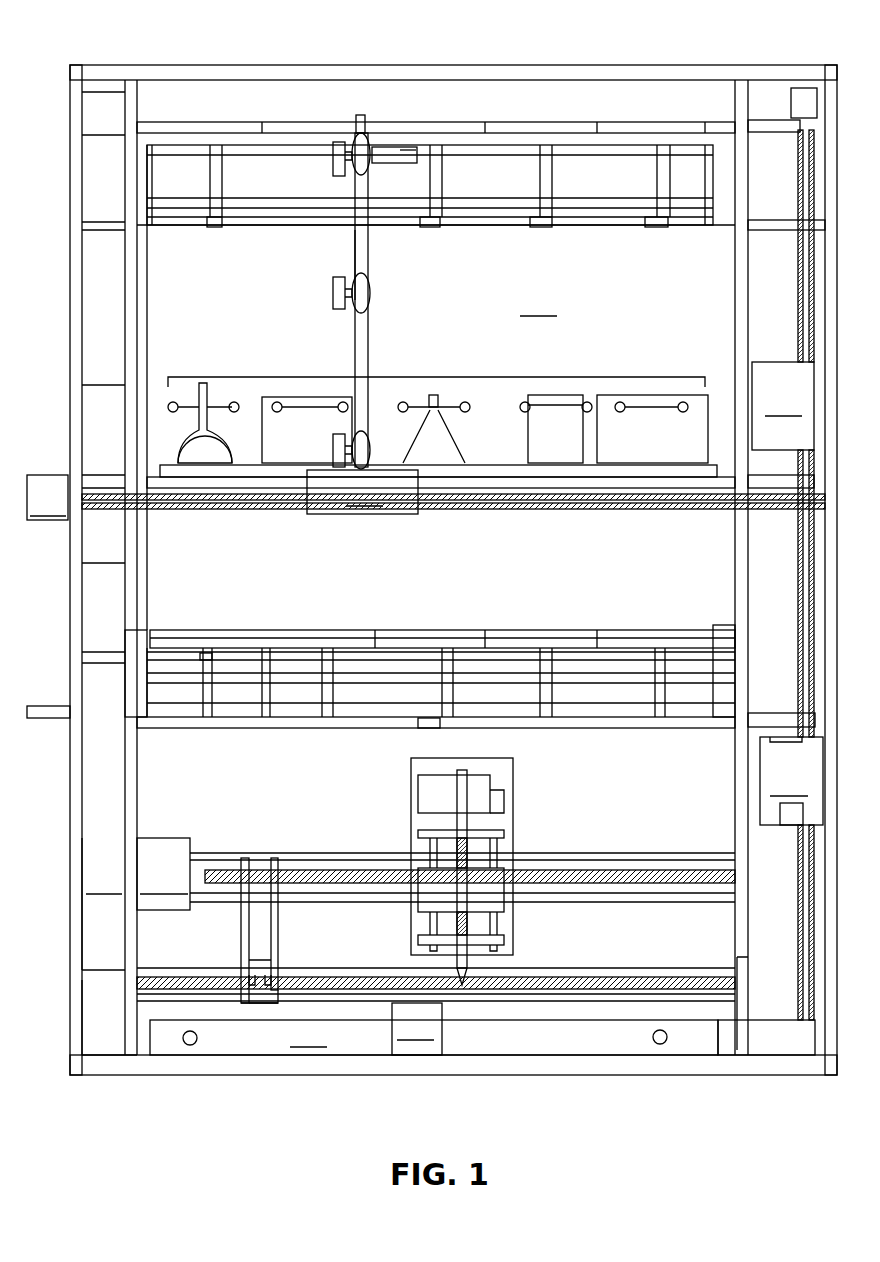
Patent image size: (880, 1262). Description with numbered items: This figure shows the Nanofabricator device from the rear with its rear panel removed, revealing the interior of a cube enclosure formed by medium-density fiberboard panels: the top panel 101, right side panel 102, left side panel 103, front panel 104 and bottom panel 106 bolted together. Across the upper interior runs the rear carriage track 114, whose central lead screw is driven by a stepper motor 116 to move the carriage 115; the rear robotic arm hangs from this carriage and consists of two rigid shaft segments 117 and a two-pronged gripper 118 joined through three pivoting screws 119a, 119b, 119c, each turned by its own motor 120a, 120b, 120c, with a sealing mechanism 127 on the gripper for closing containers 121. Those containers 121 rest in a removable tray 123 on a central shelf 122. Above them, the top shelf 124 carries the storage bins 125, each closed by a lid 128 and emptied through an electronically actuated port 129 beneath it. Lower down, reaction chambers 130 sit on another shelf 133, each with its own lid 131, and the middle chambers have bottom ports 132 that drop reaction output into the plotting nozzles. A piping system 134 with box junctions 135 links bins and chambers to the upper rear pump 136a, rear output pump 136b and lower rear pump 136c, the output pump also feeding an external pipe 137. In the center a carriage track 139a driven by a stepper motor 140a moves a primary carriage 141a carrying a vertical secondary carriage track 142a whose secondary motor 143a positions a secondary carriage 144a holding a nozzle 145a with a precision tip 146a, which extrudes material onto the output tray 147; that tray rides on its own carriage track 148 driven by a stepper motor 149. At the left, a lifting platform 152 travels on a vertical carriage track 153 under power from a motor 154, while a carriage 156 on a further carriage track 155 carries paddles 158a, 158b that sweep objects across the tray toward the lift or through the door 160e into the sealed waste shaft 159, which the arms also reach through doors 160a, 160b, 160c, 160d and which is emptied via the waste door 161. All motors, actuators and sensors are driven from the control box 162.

The top panel 101 is at (178, 72).
The right side panel 102 is at (75, 137).
The left side panel 103 is at (830, 1022).
The front panel 104 is at (538, 305).
The bottom panel 106 is at (143, 1068).
The rear carriage track 114 is at (270, 483).
The carriage 115 is at (362, 492).
The stepper motor 116 is at (47, 497).
The rigid shaft segments 117 is at (360, 253).
The two-pronged gripper 118 is at (405, 157).
The pivoting screw 119a is at (365, 155).
The pivoting screw 119b is at (332, 300).
The pivoting screw 119c is at (333, 447).
The motor 120a is at (342, 157).
The motor 120b is at (333, 290).
The motor 120c is at (358, 450).
The containers 121 is at (435, 375).
The shelf 122 is at (113, 500).
The removable tray 123 is at (185, 472).
The top shelf 124 is at (155, 222).
The storage bins 125 is at (178, 177).
The sealing mechanism 127 is at (360, 117).
The lid 128 is at (650, 127).
The port 129 is at (212, 222).
The reaction chambers 130 is at (180, 693).
The lid 131 is at (208, 637).
The ports 132 is at (420, 725).
The shelf 133 is at (202, 727).
The piping system 134 is at (168, 680).
The box junction 135 is at (200, 657).
The upper rear pump 136a is at (727, 173).
The rear output pump 136b is at (133, 638).
The lower rear pump 136c is at (727, 672).
The external pipe 137 is at (50, 708).
The carriage track 139a is at (297, 900).
The stepper motor 140a is at (163, 874).
The primary carriage 141a is at (500, 777).
The secondary carriage track 142a is at (495, 845).
The secondary motor 143a is at (436, 795).
The secondary carriage 144a is at (497, 883).
The nozzle 145a is at (463, 840).
The precision tip 146a is at (433, 793).
The output tray 147 is at (434, 1037).
The carriage track 148 is at (190, 1047).
The stepper motor 149 is at (417, 1029).
The lifting platform 152 is at (783, 406).
The vertical carriage track 153 is at (810, 140).
The motor 154 is at (802, 92).
The carriage track 155 is at (345, 982).
The carriage 156 is at (247, 1005).
The paddle 158a is at (243, 922).
The paddle 158b is at (273, 933).
The waste shaft 159 is at (102, 904).
The electronically controlled door 160a is at (103, 145).
The electronically controlled door 160b is at (100, 395).
The electronically controlled door 160c is at (102, 622).
The electronically controlled door 160d is at (105, 1010).
The electronically controlled door 160e is at (132, 1037).
The waste door 161 is at (77, 985).
The control box 162 is at (791, 781).